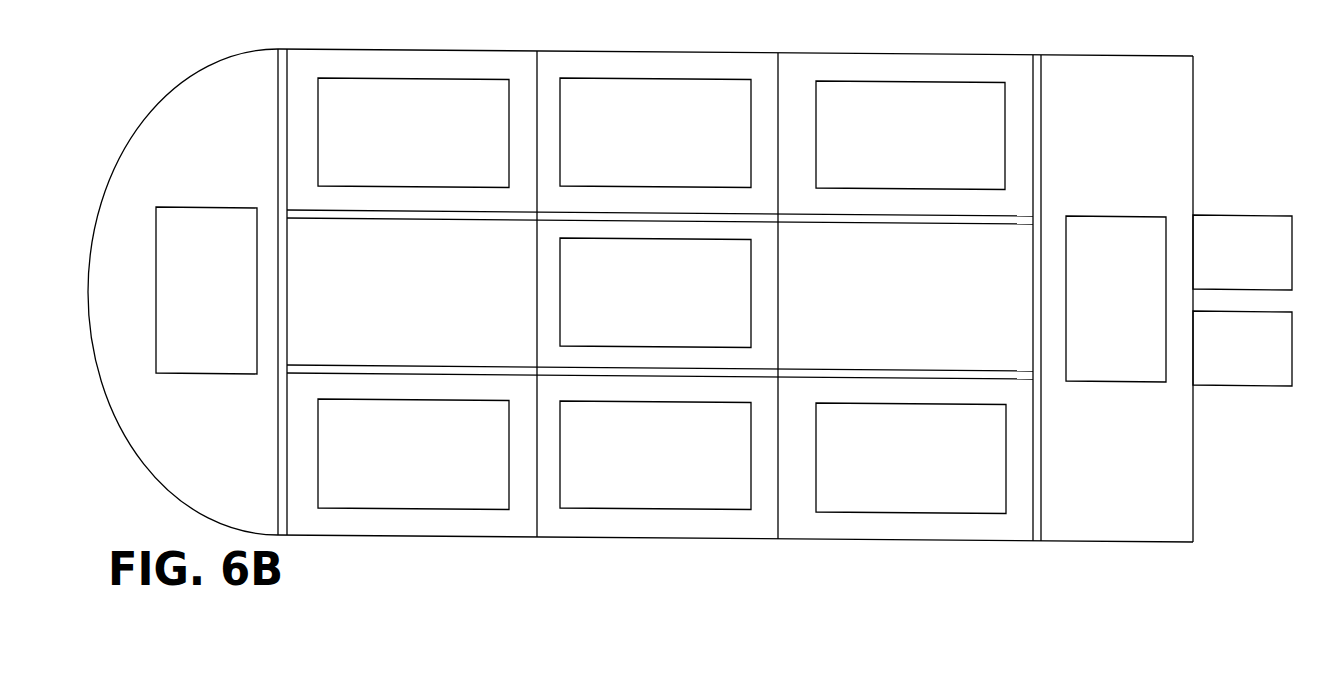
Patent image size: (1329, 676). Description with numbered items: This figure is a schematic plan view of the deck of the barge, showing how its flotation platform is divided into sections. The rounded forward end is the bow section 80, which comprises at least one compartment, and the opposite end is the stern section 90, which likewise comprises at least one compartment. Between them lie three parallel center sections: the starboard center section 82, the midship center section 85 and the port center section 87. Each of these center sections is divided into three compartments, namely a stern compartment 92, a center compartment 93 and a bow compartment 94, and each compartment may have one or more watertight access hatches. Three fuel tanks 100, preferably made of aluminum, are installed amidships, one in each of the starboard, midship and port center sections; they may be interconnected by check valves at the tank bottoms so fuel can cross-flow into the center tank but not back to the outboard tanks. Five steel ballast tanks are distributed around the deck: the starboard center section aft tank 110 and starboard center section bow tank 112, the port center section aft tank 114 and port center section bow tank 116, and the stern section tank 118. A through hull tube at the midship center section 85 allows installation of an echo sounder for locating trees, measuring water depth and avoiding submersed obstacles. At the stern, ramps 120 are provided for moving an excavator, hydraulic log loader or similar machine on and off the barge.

The bow section 80 is at (143, 132).
The starboard center section 82 is at (341, 48).
The midship center section 85 is at (307, 213).
The port center section 87 is at (325, 537).
The stern section 90 is at (1193, 53).
The stern compartment 92 is at (922, 67).
The center compartment 93 is at (672, 63).
The bow compartment 94 is at (495, 63).
The fuel tank 100 is at (610, 127).
The starboard center section aft tank 110 is at (858, 147).
The starboard center section bow tank 112 is at (431, 147).
The port center section aft tank 114 is at (938, 470).
The port center section bow tank 116 is at (420, 477).
The stern section tank 118 is at (1141, 365).
The ramp 120 is at (1243, 227).